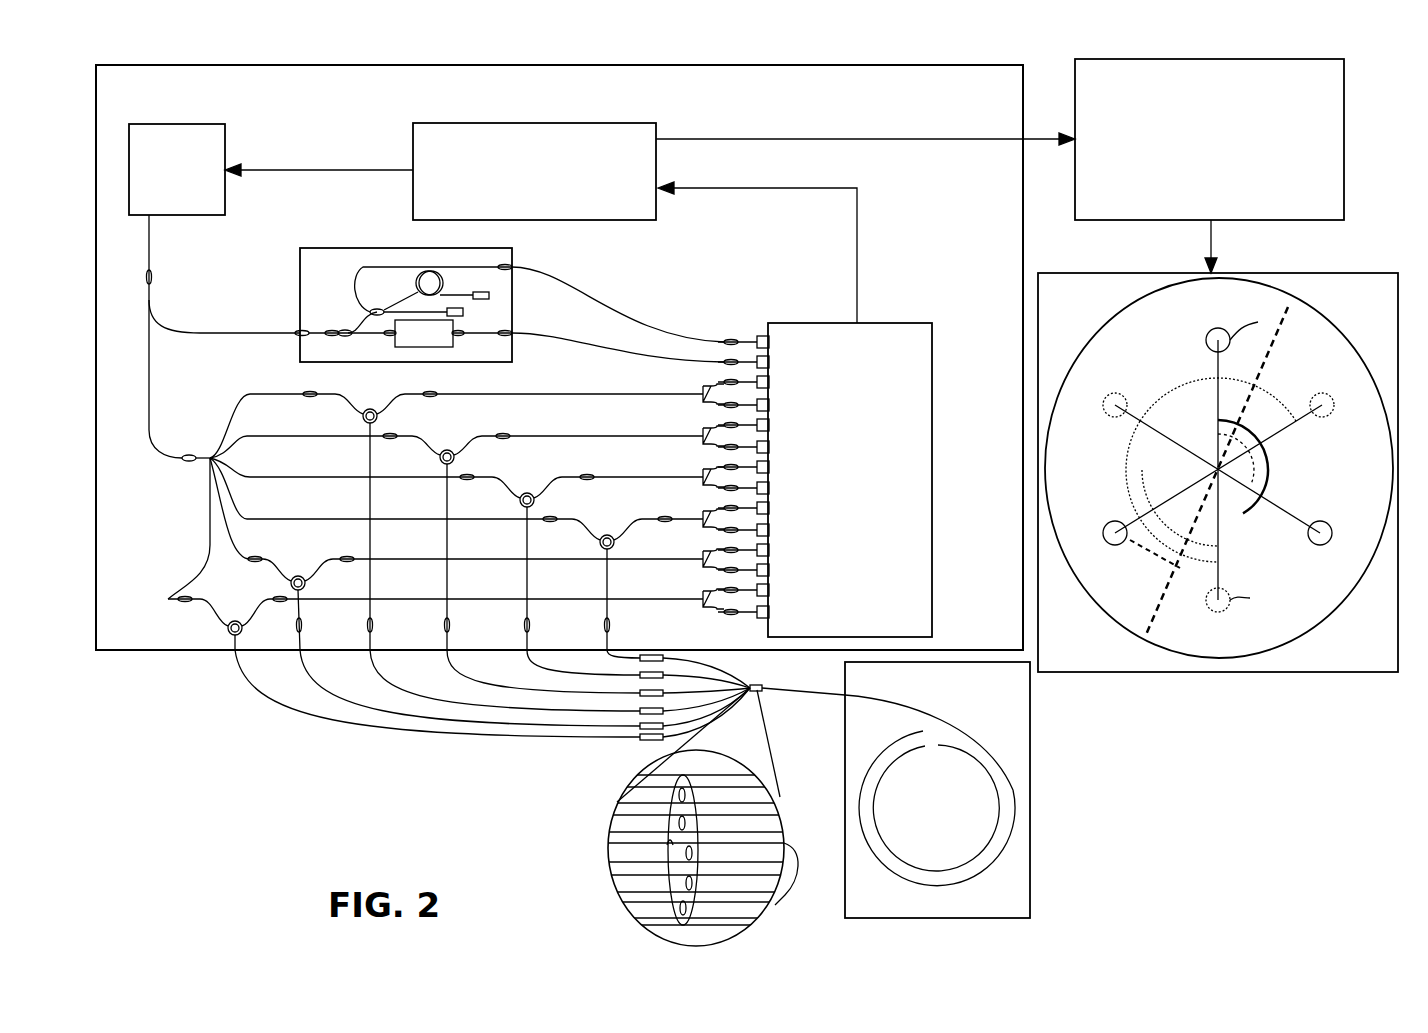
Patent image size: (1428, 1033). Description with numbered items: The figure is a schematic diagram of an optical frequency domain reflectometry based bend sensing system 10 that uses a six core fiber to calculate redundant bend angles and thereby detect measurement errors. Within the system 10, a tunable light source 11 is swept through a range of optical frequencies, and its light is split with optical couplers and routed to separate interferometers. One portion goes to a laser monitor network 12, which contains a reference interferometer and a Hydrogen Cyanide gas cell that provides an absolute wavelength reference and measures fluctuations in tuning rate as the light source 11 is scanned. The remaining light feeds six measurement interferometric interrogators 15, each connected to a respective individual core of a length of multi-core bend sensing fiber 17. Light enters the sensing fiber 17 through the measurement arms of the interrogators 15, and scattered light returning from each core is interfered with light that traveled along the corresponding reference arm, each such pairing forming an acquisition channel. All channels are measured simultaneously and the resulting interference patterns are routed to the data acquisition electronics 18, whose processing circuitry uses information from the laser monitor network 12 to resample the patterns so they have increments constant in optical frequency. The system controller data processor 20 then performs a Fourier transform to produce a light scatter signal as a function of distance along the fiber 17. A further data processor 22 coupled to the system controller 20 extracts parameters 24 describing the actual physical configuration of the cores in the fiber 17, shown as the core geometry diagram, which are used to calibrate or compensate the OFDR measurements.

The OFDR-based bend sensing system 10 is at (660, 65).
The tunable light source 11 is at (197, 215).
The laser monitor network 12 is at (505, 248).
The interferometric interrogator 15 is at (200, 488).
The multi-core bend sensing fiber 17 is at (1030, 770).
The data acquisition electronics 18 is at (930, 323).
The system controller data processor 20 is at (635, 123).
The data processor 22 is at (1320, 59).
The parameters 24 is at (1210, 672).